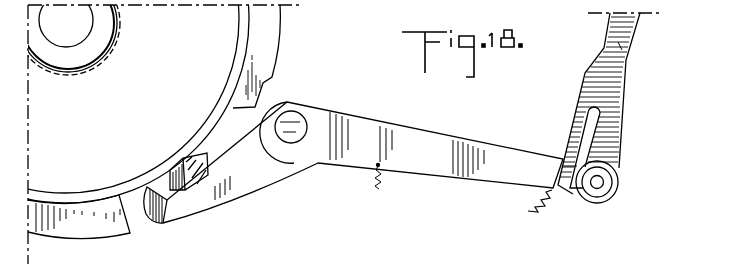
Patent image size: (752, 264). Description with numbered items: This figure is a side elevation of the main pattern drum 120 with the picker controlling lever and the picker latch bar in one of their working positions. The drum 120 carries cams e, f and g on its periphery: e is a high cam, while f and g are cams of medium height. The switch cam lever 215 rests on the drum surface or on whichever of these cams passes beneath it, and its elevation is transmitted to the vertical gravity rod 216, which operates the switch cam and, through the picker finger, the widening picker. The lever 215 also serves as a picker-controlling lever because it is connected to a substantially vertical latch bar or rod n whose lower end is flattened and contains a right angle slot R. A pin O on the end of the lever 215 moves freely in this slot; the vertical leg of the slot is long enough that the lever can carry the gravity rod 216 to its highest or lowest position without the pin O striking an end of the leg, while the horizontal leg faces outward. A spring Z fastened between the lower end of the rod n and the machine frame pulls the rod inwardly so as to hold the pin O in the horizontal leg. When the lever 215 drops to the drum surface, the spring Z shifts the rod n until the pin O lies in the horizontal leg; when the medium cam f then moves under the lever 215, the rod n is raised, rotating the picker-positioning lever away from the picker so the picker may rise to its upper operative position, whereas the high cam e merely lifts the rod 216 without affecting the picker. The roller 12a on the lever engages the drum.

The main pattern drum 120 is at (185, 112).
The roller 12a is at (292, 127).
The switch cam lever 215 is at (254, 176).
The gravity rod 216 is at (612, 143).
The high cam e is at (111, 222).
The medium height cam f is at (209, 153).
The medium height cam g is at (262, 91).
The latch bar n is at (618, 42).
The right angle slot R is at (562, 167).
The pin O is at (604, 182).
The spring Z is at (549, 208).